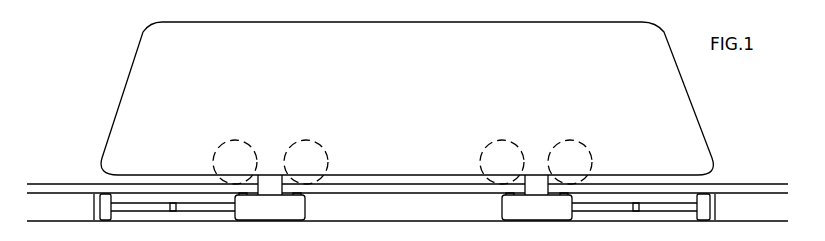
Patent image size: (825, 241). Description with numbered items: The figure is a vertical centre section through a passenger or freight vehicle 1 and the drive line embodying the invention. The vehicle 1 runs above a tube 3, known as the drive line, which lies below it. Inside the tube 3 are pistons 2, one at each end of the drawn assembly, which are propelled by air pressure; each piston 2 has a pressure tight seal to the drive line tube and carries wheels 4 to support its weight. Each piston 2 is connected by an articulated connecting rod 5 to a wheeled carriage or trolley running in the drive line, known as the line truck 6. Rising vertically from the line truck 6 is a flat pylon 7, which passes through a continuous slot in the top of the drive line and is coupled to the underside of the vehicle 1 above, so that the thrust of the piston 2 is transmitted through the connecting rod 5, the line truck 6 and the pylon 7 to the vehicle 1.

The vehicle 1 is at (697, 118).
The piston 2 is at (93, 215).
The tube 3 is at (385, 222).
The wheels 4 is at (322, 146).
The articulated connecting rod 5 is at (152, 208).
The line truck 6 is at (263, 212).
The flat pylon 7 is at (272, 180).